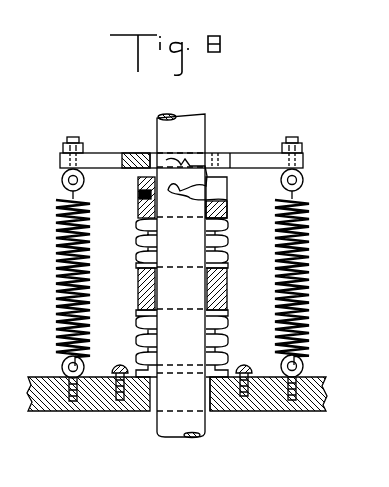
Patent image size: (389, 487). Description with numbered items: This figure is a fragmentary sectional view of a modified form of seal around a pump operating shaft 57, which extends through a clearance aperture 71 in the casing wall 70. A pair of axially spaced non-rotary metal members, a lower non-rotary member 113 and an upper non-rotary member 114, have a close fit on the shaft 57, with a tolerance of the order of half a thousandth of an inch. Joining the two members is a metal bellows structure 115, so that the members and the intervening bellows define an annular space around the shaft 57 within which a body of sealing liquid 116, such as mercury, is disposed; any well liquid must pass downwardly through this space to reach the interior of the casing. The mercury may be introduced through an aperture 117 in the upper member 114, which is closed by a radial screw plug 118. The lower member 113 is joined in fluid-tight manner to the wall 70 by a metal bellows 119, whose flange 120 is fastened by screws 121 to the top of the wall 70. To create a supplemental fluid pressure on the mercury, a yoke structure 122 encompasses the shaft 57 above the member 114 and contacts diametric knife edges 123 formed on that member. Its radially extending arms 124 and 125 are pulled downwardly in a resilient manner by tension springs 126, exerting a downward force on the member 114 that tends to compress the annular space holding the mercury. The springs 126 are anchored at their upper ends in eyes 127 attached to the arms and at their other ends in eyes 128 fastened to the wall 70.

The pump operating shaft 57 is at (200, 440).
The casing wall 70 is at (312, 407).
The clearance aperture 71 is at (212, 413).
The lower non-rotary member 113 is at (140, 291).
The upper non-rotary member 114 is at (226, 200).
The metal bellows structure 115 is at (137, 243).
The body of sealing liquid 116 is at (228, 243).
The aperture 117 is at (140, 208).
The radial screw plug 118 is at (139, 195).
The metal bellows 119 is at (138, 352).
The flange 120 is at (268, 358).
The screws 121 is at (118, 376).
The yoke structure 122 is at (228, 153).
The diametric knife edges 123 is at (182, 163).
The radially extending arm 124 is at (103, 157).
The radially extending arm 125 is at (270, 153).
The tension springs 126 is at (62, 287).
The eyes 127 is at (305, 180).
The eyes 128 is at (305, 366).